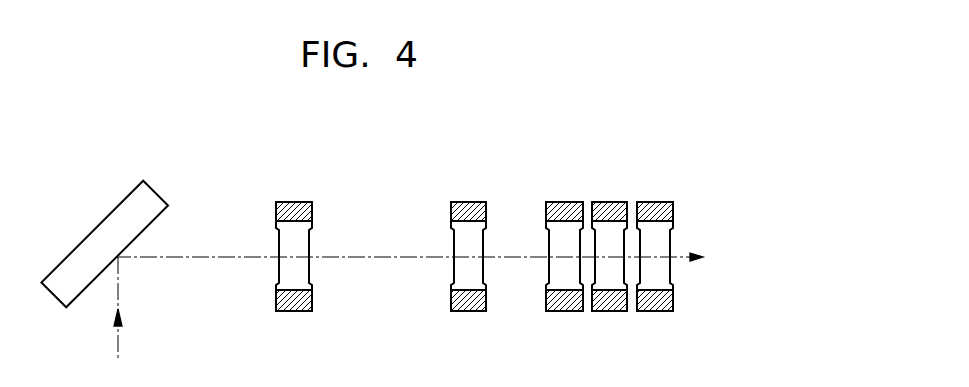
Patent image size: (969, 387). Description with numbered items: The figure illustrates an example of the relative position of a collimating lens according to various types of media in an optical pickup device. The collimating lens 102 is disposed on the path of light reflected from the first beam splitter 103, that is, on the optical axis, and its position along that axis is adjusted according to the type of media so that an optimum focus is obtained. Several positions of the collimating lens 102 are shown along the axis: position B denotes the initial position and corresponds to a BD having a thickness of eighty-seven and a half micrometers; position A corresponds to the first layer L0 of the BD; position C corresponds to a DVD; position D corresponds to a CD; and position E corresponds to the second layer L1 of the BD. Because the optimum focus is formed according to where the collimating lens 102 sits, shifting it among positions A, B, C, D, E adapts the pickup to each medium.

The collimating lens 102 is at (469, 245).
The first beam splitter 103 is at (97, 232).
The position corresponding to first layer L0 of the BD A is at (292, 221).
The initial position B is at (469, 221).
The position corresponding to DVD C is at (565, 221).
The position corresponding to CD D is at (609, 221).
The position corresponding to second layer L1 of the BD E is at (654, 221).